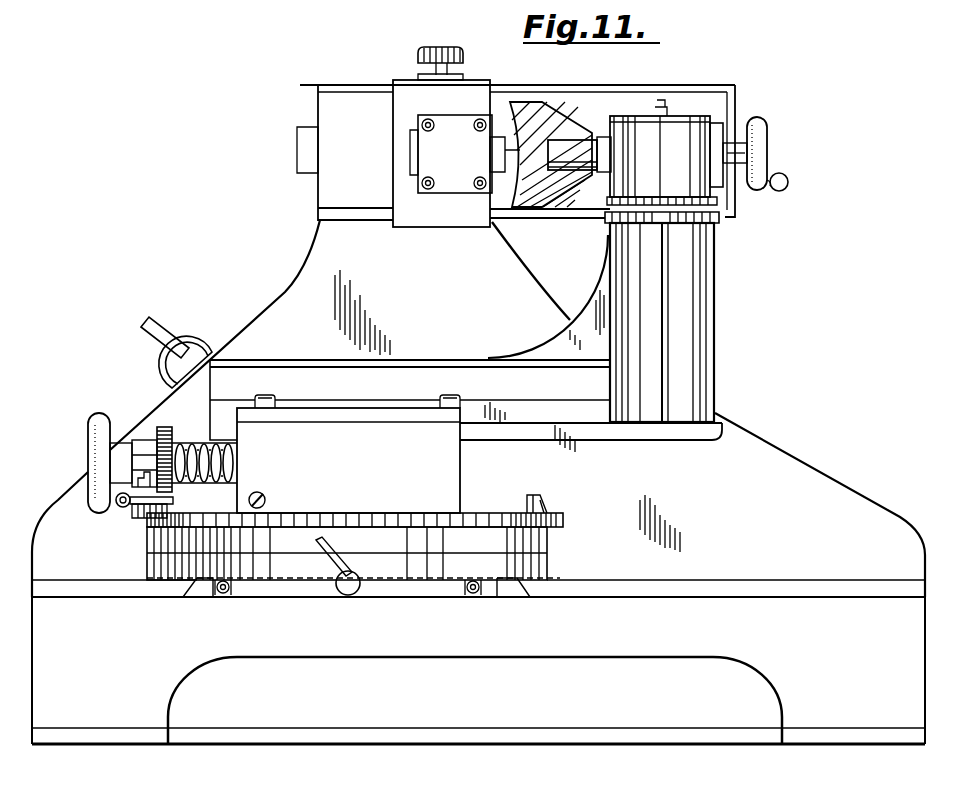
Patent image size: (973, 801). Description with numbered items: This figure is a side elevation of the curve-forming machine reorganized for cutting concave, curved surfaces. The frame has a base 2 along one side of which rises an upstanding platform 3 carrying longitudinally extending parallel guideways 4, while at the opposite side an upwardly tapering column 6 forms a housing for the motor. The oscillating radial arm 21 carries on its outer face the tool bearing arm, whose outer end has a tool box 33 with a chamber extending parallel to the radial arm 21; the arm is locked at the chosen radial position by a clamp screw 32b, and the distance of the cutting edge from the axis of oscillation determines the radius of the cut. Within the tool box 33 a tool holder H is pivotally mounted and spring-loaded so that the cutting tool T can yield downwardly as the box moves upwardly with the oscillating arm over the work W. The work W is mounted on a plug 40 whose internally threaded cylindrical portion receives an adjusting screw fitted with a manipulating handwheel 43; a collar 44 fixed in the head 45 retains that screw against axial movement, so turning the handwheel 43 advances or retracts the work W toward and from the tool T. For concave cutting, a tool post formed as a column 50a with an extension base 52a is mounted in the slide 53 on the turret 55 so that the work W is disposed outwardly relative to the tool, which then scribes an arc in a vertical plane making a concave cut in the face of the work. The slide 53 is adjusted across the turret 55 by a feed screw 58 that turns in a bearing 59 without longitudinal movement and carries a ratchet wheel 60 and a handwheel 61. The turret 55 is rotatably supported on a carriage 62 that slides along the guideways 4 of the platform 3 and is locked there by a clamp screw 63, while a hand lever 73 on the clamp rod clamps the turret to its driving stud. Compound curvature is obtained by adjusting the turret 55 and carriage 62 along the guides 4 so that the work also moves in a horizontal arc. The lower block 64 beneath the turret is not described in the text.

The base 2 is at (640, 746).
The platform 3 is at (898, 650).
The guideways 4 is at (795, 588).
The column 6 is at (301, 276).
The radial arm 21 is at (700, 88).
The clamp screw 32b is at (443, 50).
The tool box 33 is at (448, 131).
The tool holder H is at (500, 157).
The cutting tool T is at (517, 149).
The work W is at (548, 102).
The plug 40 is at (563, 146).
The head 45 is at (688, 135).
The collar 44 is at (758, 160).
The handwheel 43 is at (789, 183).
The column 50a is at (698, 268).
The extension base 52a is at (553, 430).
The slide 53 is at (440, 468).
The turret 55 is at (545, 500).
The slide block 64 is at (548, 562).
The carriage 62 is at (305, 590).
The clamp screw 63 is at (352, 587).
The hand lever 73 is at (130, 512).
The handwheel 61 is at (95, 437).
The bearing 59 is at (135, 440).
The ratchet wheel 60 is at (160, 428).
The feed screw 58 is at (207, 443).